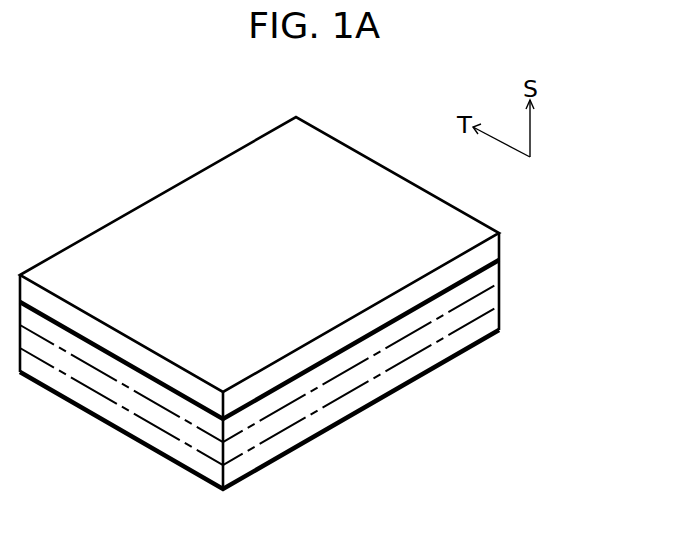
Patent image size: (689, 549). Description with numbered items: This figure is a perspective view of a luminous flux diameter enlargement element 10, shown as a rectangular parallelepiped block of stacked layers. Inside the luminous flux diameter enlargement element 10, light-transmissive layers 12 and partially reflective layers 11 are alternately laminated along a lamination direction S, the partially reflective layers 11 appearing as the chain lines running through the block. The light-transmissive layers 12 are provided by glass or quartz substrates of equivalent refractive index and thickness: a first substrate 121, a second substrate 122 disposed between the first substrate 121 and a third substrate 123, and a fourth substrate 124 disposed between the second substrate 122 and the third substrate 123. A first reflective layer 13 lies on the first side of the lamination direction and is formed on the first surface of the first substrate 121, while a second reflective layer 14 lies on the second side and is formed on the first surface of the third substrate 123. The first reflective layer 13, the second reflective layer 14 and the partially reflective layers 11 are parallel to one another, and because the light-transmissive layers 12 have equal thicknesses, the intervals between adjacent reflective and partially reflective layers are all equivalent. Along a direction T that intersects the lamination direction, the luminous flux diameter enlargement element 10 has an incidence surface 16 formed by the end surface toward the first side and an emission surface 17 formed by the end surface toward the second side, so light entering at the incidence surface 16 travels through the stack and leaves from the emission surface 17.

The luminous flux diameter enlargement element 10 is at (155, 184).
The partially reflective layer 11 is at (353, 368).
The light-transmissive layer 12 is at (335, 368).
The first substrate 121 is at (488, 322).
The second substrate 122 is at (488, 301).
The third substrate 123 is at (492, 250).
The fourth substrate 124 is at (483, 281).
The first reflective layer 13 is at (487, 337).
The second reflective layer 14 is at (480, 268).
The incidence surface 16 is at (470, 333).
The emission surface 17 is at (49, 259).